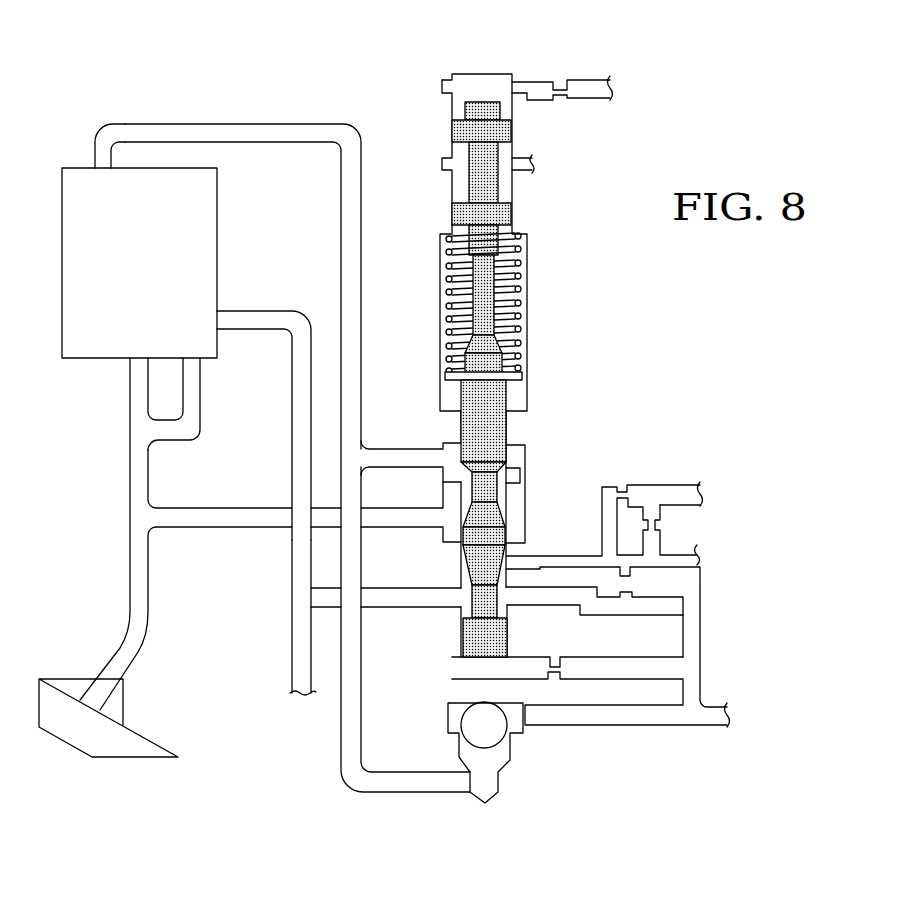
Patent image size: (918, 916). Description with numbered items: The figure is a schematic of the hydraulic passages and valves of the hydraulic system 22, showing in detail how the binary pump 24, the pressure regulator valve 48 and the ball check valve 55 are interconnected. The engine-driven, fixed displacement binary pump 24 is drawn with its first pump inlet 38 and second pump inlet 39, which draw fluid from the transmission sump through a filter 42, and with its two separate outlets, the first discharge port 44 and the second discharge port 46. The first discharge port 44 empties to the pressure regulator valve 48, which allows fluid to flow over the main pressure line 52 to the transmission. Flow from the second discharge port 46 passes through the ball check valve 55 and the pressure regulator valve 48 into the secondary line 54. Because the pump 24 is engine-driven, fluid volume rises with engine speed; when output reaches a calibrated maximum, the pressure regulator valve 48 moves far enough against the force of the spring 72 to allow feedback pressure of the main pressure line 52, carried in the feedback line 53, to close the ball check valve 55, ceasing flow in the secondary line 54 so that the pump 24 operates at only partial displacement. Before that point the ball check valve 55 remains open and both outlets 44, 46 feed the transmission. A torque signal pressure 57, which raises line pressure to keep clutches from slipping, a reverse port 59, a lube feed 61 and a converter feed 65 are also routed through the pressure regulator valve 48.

The hydraulic system 22 is at (214, 72).
The binary pump 24 is at (152, 274).
The first pump inlet 38 is at (129, 368).
The second pump inlet 39 is at (201, 395).
The filter 42 is at (130, 738).
The first discharge port 44 is at (240, 310).
The second discharge port 46 is at (93, 155).
The pressure regulator valve 48 is at (574, 305).
The main pressure line 52 is at (290, 633).
The feedback line 53 is at (412, 608).
The secondary line 54 is at (318, 123).
The ball check valve 55 is at (532, 758).
The torque signal pressure 57 is at (596, 78).
The reverse port 59 is at (528, 172).
The lube feed 61 is at (690, 484).
The converter feed 65 is at (690, 547).
The spring 72 is at (530, 262).